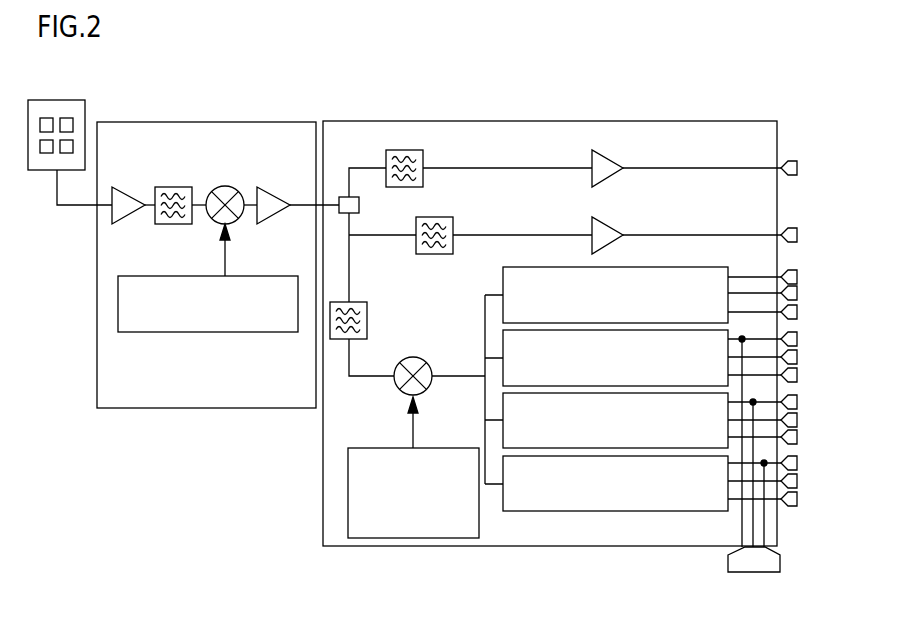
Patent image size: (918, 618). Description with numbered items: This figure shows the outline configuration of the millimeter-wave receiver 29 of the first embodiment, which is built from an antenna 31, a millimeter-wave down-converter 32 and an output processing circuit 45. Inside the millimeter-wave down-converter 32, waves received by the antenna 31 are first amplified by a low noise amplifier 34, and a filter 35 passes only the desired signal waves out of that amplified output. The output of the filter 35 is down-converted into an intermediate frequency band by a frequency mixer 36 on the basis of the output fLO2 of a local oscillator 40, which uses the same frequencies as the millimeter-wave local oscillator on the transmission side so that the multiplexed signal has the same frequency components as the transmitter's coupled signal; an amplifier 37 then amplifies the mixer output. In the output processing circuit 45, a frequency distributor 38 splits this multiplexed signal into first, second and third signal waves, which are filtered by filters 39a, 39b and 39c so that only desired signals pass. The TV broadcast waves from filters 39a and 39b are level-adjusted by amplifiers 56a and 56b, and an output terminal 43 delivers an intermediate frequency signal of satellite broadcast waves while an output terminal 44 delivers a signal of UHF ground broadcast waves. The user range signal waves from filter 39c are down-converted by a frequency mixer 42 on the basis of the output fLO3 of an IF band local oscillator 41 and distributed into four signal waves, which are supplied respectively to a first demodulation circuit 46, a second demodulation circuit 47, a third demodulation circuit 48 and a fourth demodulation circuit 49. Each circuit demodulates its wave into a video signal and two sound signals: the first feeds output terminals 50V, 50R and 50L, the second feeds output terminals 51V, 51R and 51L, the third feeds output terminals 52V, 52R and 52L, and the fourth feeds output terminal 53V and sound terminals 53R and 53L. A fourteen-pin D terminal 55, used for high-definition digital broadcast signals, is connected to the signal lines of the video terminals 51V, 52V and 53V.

The millimeter-wave receiver 29 is at (832, 73).
The antenna 31 is at (52, 100).
The millimeter-wave down-converter 32 is at (132, 122).
The low noise amplifier 34 is at (112, 212).
The filter 35 is at (172, 187).
The frequency mixer 36 is at (225, 186).
The amplifier 37 is at (272, 187).
The frequency distributor 38 is at (343, 197).
The filter 39a is at (408, 150).
The filter 39b is at (438, 217).
The filter 39c is at (362, 302).
The local oscillator 40 is at (118, 305).
The IF band local oscillator 41 is at (348, 512).
The frequency mixer 42 is at (396, 385).
The output terminal 43 is at (799, 168).
The output terminal 44 is at (799, 235).
The output processing circuit 45 is at (600, 547).
The first demodulation circuit 46 is at (503, 283).
The second demodulation circuit 47 is at (503, 346).
The third demodulation circuit 48 is at (503, 409).
The fourth demodulation circuit 49 is at (659, 512).
The output terminal 50V is at (799, 277).
The output terminal 50L is at (799, 293).
The output terminal 50R is at (799, 312).
The output terminal 51V is at (799, 339).
The output terminal 51L is at (799, 357).
The output terminal 51R is at (799, 375).
The output terminal 52V is at (799, 402).
The output terminal 52L is at (799, 420).
The output terminal 52R is at (799, 437).
The output terminal 53V is at (799, 463).
The sound terminal 53L is at (799, 481).
The sound terminal 53R is at (799, 499).
The D terminal 55 is at (782, 563).
The amplifier 56a is at (612, 156).
The amplifier 56b is at (612, 223).